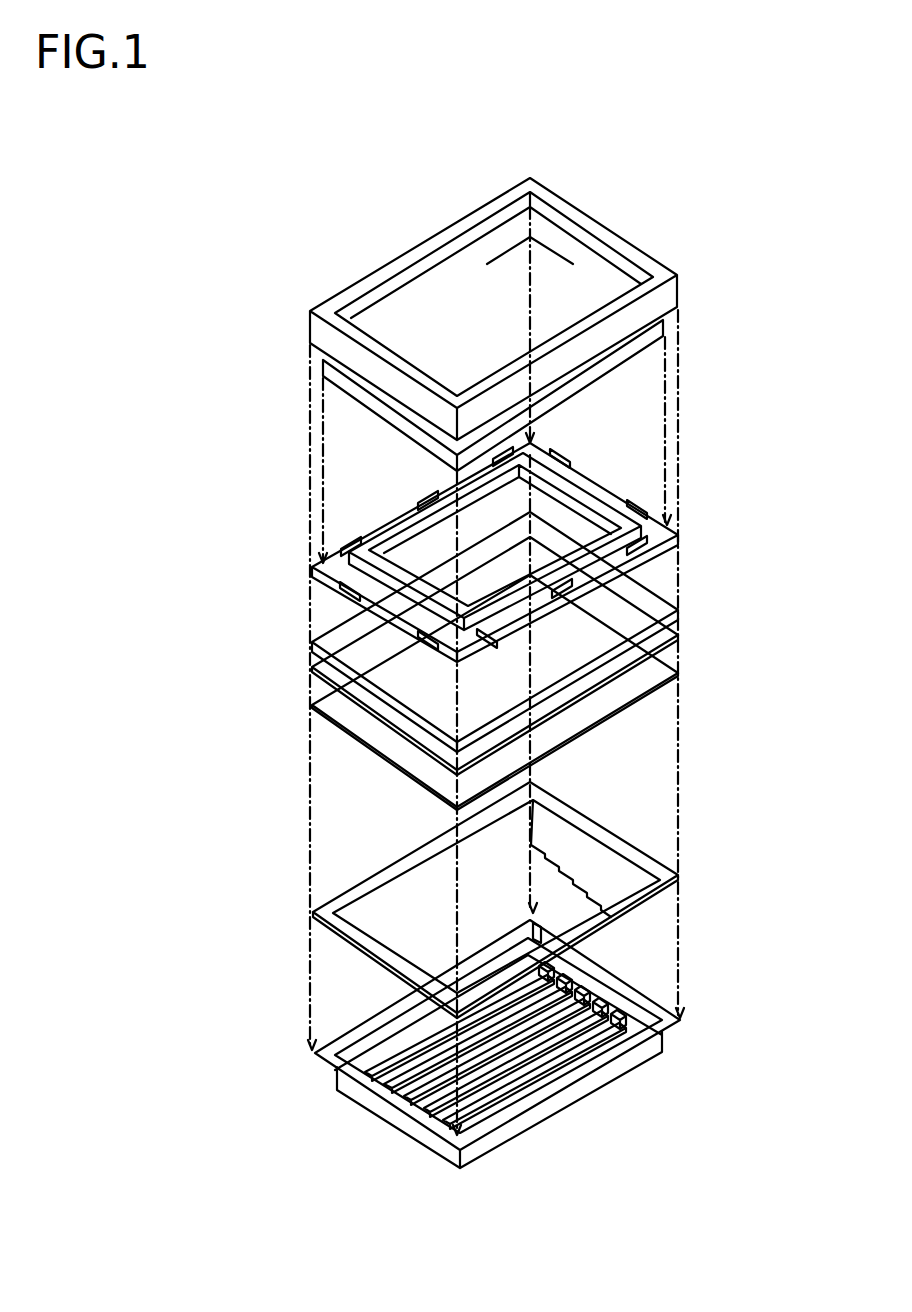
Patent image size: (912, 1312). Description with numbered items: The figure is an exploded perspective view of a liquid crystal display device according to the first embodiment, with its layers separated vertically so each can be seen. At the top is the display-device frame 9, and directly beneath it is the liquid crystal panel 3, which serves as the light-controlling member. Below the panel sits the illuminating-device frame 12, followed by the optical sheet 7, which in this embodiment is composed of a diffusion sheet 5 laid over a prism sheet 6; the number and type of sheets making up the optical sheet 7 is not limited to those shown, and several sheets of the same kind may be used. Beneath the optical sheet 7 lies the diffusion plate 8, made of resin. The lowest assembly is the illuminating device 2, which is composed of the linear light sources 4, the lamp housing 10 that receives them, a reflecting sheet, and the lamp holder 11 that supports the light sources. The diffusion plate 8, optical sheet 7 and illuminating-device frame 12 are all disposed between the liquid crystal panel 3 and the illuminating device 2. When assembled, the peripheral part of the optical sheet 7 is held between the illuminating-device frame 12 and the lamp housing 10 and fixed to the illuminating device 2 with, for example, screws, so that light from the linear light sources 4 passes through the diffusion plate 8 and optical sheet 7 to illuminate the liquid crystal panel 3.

The illuminating device 2 is at (548, 975).
The liquid crystal panel 3 is at (325, 378).
The linear light sources 4 is at (520, 1067).
The diffusion sheet 5 is at (338, 645).
The prism sheet 6 is at (338, 668).
The optical sheet 7 is at (429, 643).
The diffusion plate 8 is at (338, 707).
The display-device frame 9 is at (320, 328).
The lamp housing 10 is at (625, 1063).
The lamp holder 11 is at (653, 897).
The illuminating-device frame 12 is at (322, 593).